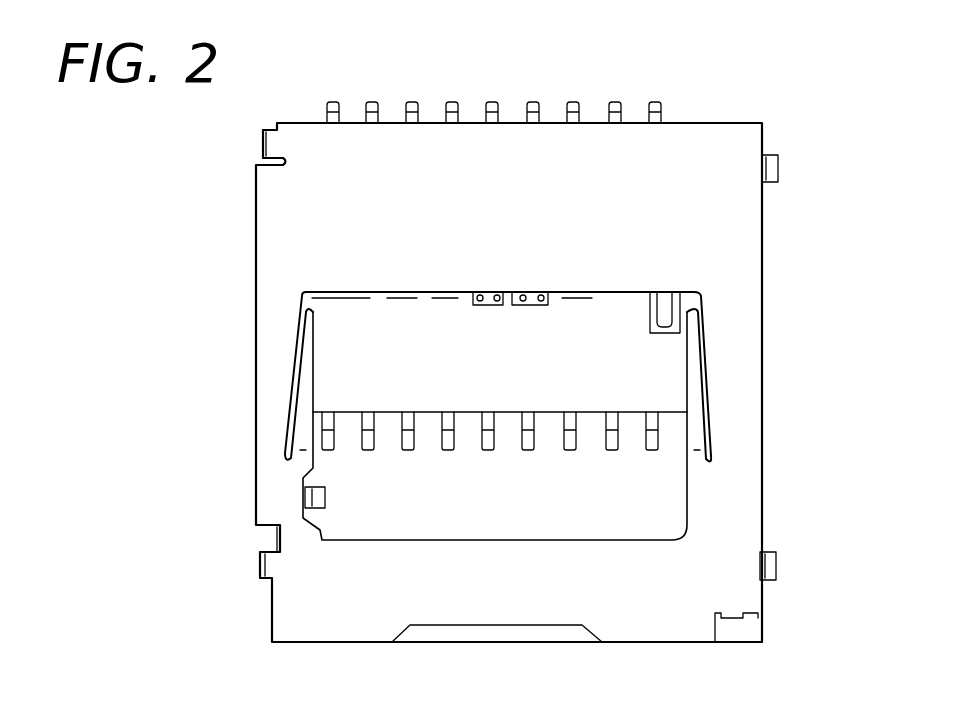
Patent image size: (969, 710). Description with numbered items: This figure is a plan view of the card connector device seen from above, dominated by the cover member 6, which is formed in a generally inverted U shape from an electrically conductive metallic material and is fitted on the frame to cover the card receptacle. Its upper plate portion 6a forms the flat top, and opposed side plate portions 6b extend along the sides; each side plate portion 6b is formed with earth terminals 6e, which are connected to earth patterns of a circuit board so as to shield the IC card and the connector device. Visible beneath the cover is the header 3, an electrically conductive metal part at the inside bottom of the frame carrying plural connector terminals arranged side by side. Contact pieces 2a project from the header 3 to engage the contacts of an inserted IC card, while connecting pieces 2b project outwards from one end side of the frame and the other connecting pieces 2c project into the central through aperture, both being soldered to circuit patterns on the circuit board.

The cover member 6 is at (722, 122).
The upper plate portion 6a is at (531, 200).
The earth terminals 6e is at (262, 142).
The side plate portions 6b is at (305, 372).
The contact pieces 2a is at (665, 310).
The connecting pieces 2b is at (412, 103).
The connecting pieces 2c is at (412, 447).
The header 3 is at (363, 325).